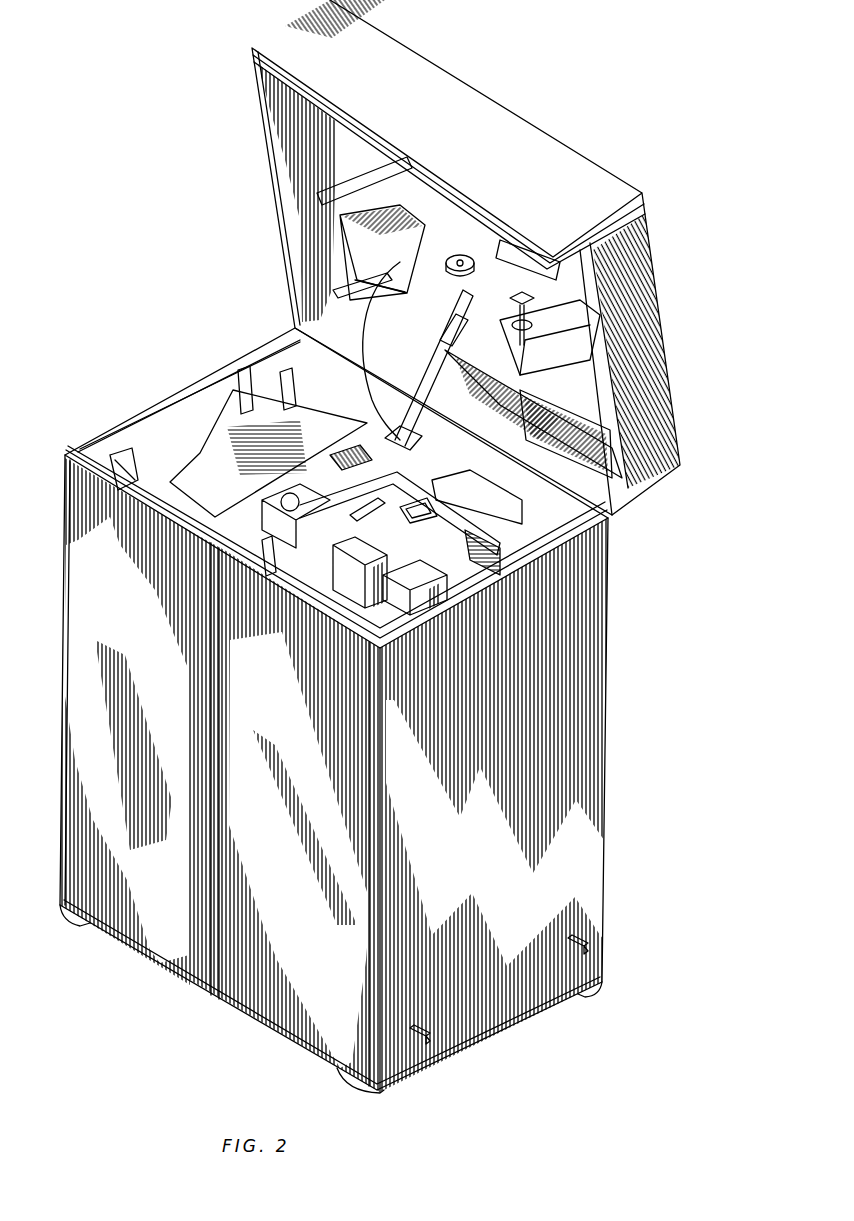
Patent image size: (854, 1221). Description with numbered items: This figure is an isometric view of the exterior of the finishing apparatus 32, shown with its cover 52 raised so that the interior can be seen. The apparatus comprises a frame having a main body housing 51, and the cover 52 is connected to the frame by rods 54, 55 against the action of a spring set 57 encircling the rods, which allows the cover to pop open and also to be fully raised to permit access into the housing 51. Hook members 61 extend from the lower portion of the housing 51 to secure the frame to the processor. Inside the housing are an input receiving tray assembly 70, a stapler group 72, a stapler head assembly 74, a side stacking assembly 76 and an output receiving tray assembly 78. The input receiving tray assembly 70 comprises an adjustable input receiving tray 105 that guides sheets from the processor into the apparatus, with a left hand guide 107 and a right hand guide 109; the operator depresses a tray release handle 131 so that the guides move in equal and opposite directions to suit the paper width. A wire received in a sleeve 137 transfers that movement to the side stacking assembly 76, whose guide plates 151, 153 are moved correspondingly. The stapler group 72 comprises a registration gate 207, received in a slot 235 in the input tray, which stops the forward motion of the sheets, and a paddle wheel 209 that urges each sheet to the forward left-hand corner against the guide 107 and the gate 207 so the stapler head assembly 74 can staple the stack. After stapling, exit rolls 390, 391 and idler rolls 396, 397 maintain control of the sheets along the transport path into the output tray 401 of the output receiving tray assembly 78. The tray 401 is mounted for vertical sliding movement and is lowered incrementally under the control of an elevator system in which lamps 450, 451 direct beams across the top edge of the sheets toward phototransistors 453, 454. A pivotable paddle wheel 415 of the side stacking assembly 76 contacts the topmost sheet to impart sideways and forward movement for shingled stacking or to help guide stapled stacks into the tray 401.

The finishing apparatus 32 is at (188, 232).
The main body housing 51 is at (610, 756).
The cover 52 is at (676, 357).
The rod 54 is at (440, 358).
The rod 55 is at (454, 386).
The spring set 57 is at (402, 448).
The hook members 61 is at (588, 942).
The input receiving tray assembly 70 is at (555, 578).
The stapler group 72 is at (526, 244).
The stapler head assembly 74 is at (270, 576).
The side stacking assembly 76 is at (336, 227).
The output receiving tray assembly 78 is at (154, 534).
The input receiving tray 105 is at (580, 484).
The left hand guide 107 is at (394, 562).
The right hand guide 109 is at (492, 492).
The tray release handle 131 is at (374, 600).
The sleeve 137 is at (368, 400).
The guide plate 151 is at (330, 182).
The guide plate 153 is at (361, 308).
The registration gate 207 is at (500, 380).
The paddle wheel 209 is at (542, 302).
The slot 235 is at (393, 518).
The exit roll 390 is at (306, 490).
The exit roll 391 is at (344, 460).
The idler roll 396 is at (462, 252).
The idler roll 397 is at (512, 310).
The tray 401 is at (194, 428).
The paddle wheel 415 is at (354, 236).
The lamp 450 is at (130, 492).
The lamp 451 is at (234, 370).
The phototransistor 453 is at (116, 452).
The phototransistor 454 is at (292, 404).